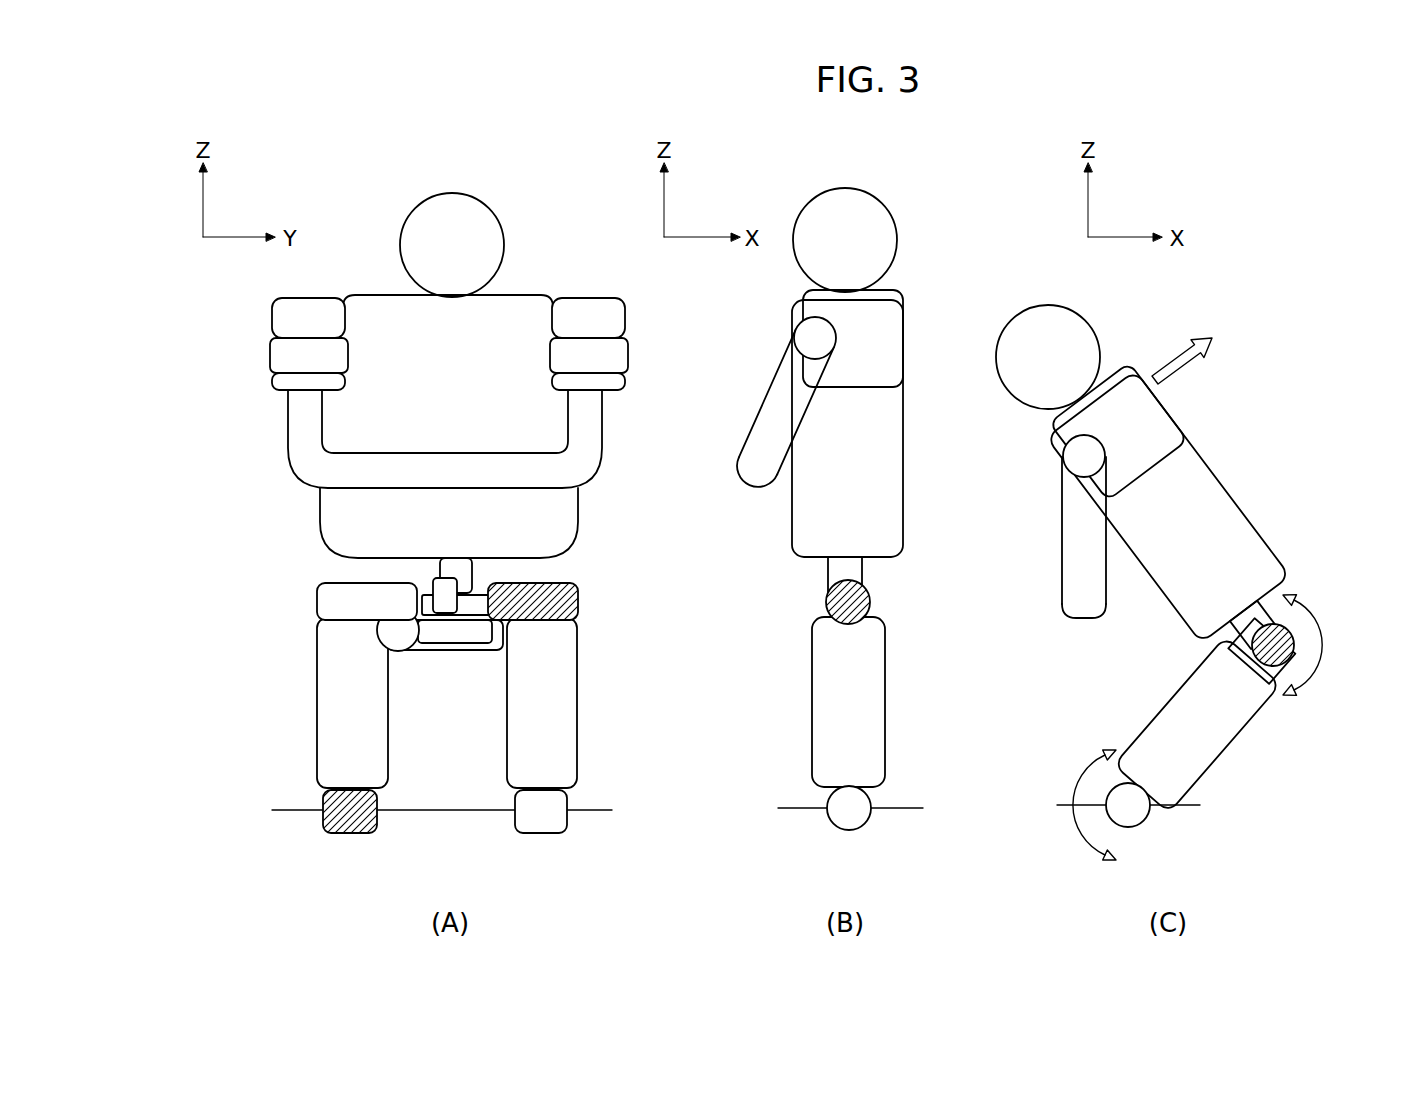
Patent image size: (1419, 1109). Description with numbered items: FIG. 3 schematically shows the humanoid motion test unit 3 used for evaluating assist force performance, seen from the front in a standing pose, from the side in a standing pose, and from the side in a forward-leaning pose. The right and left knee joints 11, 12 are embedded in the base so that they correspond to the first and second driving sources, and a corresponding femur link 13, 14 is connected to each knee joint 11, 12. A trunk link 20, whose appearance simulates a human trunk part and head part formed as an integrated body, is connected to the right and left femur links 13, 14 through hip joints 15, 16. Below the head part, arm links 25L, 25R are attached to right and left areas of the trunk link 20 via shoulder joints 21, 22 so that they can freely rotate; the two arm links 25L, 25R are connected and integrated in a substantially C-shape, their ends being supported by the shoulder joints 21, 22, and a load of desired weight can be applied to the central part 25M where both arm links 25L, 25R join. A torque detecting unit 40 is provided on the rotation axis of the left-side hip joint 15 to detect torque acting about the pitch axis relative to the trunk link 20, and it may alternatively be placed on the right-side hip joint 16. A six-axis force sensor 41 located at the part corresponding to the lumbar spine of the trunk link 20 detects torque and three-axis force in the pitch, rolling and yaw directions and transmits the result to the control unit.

The humanoid motion test unit 3 is at (537, 228).
The right knee joint 11 is at (556, 833).
The left knee joint 12 is at (325, 826).
The right femur link 13 is at (577, 703).
The left femur link 14 is at (317, 722).
The left-side hip joint 15 is at (580, 598).
The right-side hip joint 16 is at (317, 603).
The trunk link 20 is at (376, 310).
The shoulder joint 21 is at (628, 356).
The shoulder joint 22 is at (270, 355).
The right arm link 25R is at (288, 425).
The left arm link 25L is at (590, 428).
The central part 25M is at (437, 463).
The torque detecting unit 40 is at (460, 602).
The 6-axis force sensor 41 is at (440, 652).